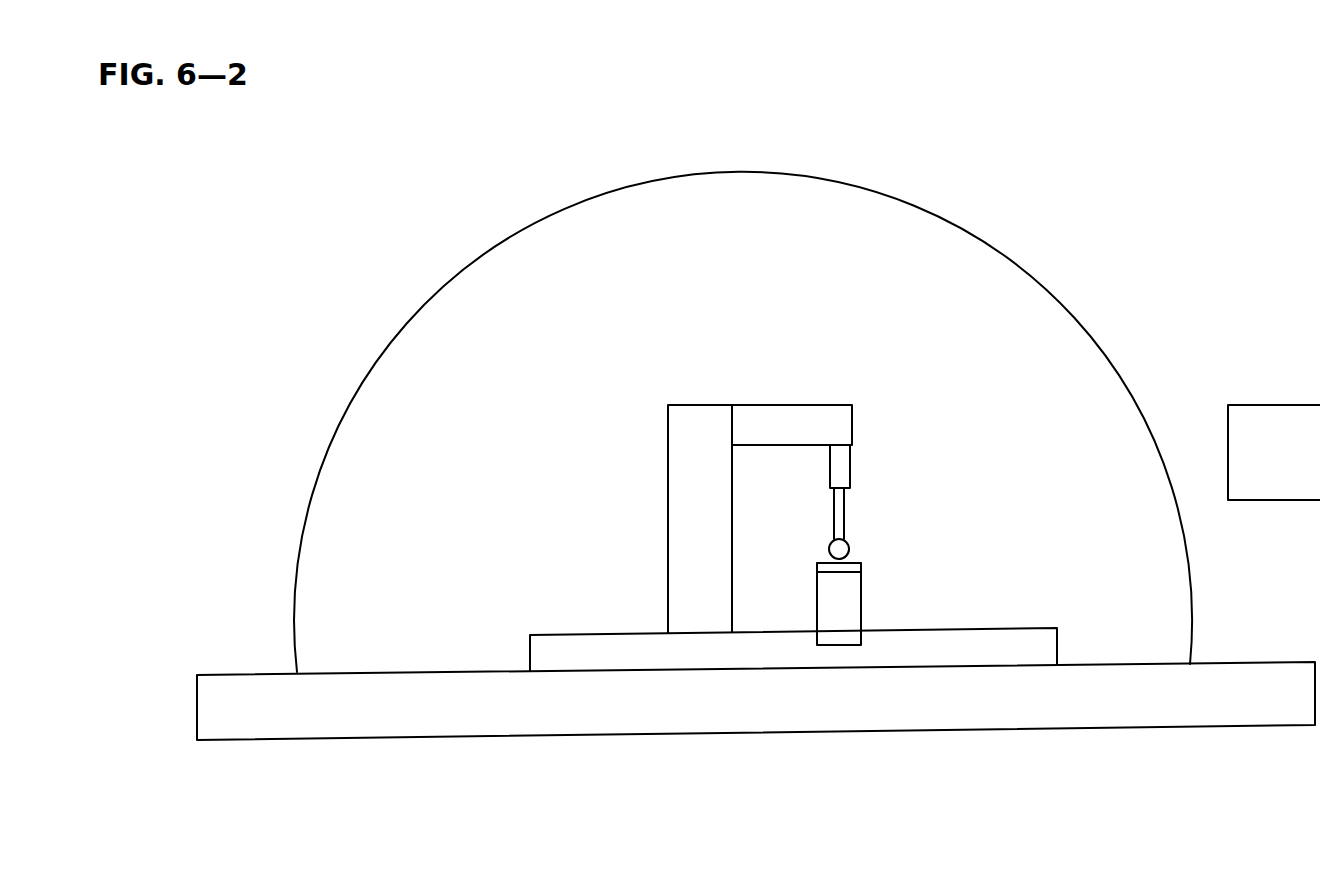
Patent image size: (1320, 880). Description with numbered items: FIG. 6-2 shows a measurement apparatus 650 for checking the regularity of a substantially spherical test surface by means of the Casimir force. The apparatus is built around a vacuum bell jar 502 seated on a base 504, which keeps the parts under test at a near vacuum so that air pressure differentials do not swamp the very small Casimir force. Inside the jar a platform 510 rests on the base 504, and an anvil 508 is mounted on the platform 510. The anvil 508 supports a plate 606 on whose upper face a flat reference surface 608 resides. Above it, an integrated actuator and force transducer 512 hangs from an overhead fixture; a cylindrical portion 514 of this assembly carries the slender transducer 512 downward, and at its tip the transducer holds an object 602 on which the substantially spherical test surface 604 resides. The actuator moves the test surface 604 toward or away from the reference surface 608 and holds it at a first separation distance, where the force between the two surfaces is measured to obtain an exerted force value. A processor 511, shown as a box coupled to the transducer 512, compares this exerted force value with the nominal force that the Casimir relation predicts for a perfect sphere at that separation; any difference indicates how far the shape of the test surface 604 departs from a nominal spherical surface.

The measurement apparatus 650 is at (957, 188).
The vacuum bell jar 502 is at (1048, 288).
The base 504 is at (1132, 718).
The platform 510 is at (1038, 647).
The processor 511 is at (1254, 463).
The plate 514 is at (840, 463).
The integrated actuator and force transducer 512 is at (841, 500).
The object 602 is at (841, 548).
The test surface 604 is at (849, 554).
The anvil 508 is at (848, 618).
The plate 606 is at (827, 566).
The reference surface 608 is at (828, 559).